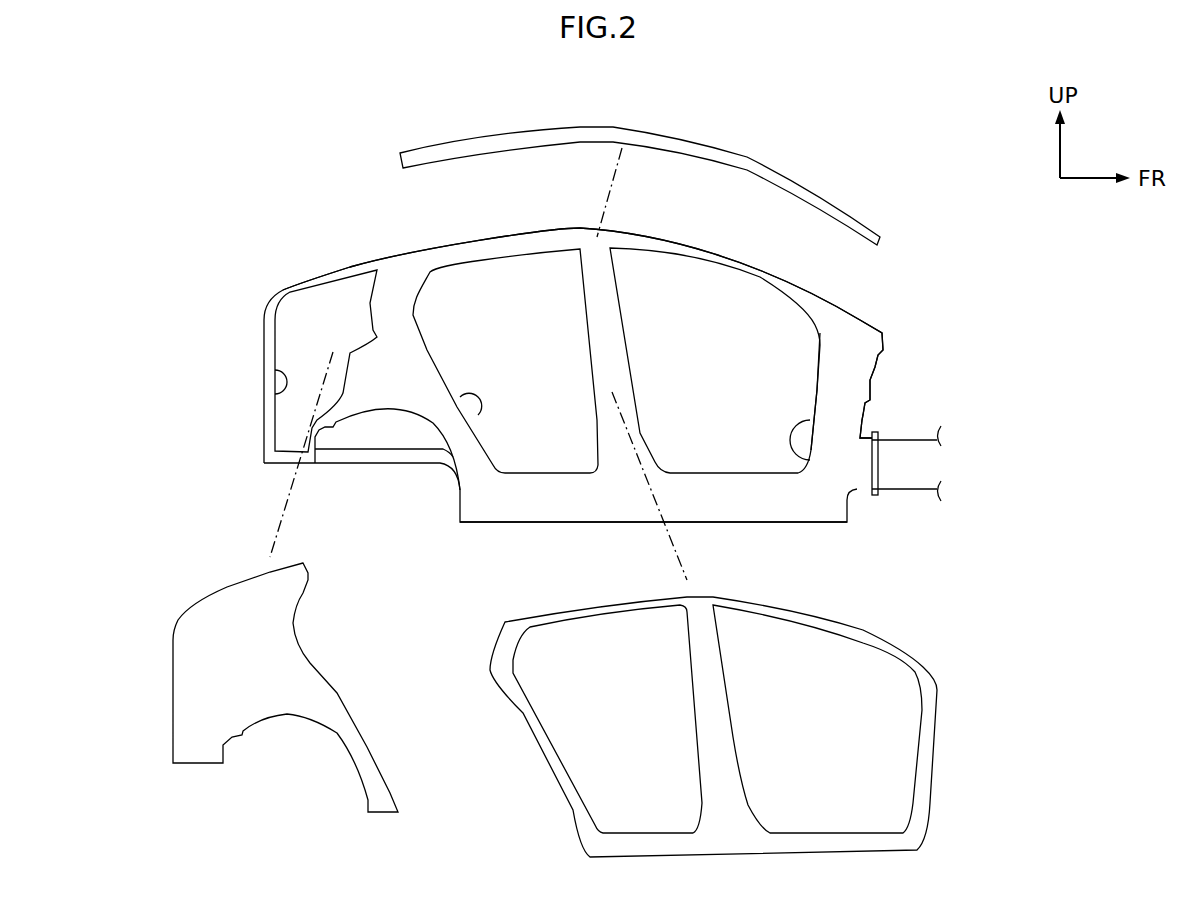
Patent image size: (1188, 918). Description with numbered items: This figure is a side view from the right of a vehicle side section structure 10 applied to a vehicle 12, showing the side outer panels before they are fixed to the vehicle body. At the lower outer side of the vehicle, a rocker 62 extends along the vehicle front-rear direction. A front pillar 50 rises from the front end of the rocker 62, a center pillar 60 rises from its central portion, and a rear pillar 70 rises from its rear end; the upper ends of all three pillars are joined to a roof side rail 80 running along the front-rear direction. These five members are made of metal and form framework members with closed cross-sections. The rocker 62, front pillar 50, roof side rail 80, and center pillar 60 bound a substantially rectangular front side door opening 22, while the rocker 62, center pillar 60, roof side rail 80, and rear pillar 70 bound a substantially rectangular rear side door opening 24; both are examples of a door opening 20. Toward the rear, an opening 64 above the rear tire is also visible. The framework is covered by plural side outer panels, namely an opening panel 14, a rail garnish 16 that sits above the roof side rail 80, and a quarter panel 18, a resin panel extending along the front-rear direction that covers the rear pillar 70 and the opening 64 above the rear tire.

The vehicle side section structure 10 is at (870, 147).
The vehicle 12 is at (897, 213).
The opening panel 14 is at (927, 680).
The rail garnish 16 is at (800, 188).
The quarter panel 18 is at (298, 675).
The door opening 20 is at (628, 500).
The front side door opening 22 is at (797, 450).
The rear side door opening 24 is at (480, 416).
The front pillar 50 is at (842, 392).
The center pillar 60 is at (613, 356).
The rocker 62 is at (730, 510).
The opening 64 is at (277, 393).
The rear pillar 70 is at (412, 364).
The roof side rail 80 is at (487, 257).